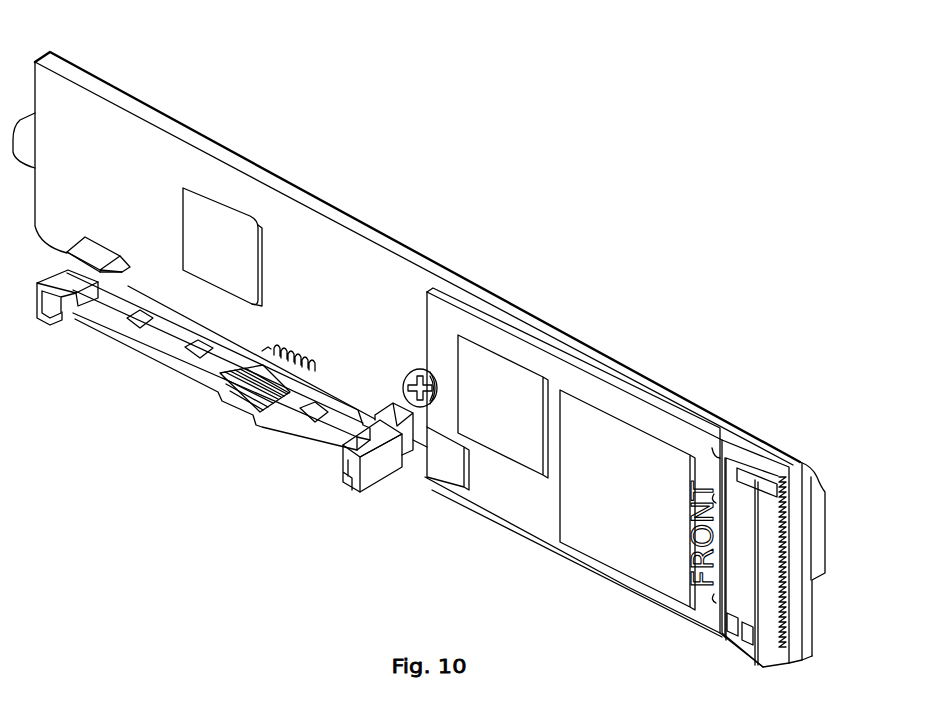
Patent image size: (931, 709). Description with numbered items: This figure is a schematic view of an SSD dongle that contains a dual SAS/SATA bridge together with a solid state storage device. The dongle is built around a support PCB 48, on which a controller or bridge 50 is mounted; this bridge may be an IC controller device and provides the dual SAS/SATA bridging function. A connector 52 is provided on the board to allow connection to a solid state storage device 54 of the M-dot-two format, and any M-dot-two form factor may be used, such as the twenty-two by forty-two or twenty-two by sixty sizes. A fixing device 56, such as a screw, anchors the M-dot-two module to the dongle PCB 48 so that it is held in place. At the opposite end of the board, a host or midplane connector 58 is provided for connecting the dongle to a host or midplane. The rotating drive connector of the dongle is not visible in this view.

The support PCB 48 is at (108, 143).
The controller or bridge 50 is at (222, 222).
The connector 52 is at (747, 597).
The solid state storage device 54 is at (625, 425).
The fixing device 56 is at (407, 372).
The host or midplane connector 58 is at (106, 314).